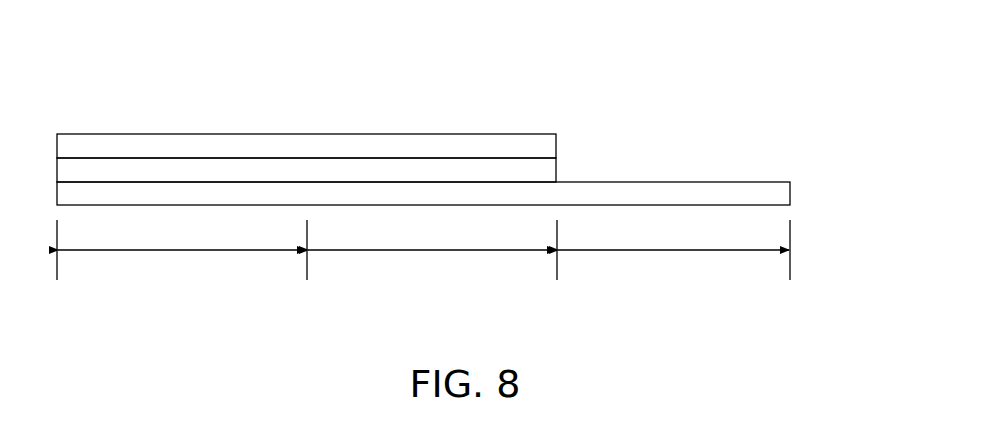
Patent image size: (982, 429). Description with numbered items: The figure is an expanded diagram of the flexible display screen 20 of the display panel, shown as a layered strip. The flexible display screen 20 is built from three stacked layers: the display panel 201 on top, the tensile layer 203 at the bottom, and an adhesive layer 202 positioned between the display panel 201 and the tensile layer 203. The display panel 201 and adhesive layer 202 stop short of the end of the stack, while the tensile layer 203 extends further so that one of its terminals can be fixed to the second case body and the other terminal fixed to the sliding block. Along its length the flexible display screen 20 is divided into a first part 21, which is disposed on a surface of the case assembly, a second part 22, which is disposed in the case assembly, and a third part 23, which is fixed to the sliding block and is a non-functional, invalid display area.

The flexible display screen 20 is at (157, 99).
The display panel 201 is at (557, 144).
The adhesive layer 202 is at (557, 170).
The tensile layer 203 is at (790, 192).
The first part 21 is at (182, 250).
The second part 22 is at (432, 250).
The third part 23 is at (674, 250).